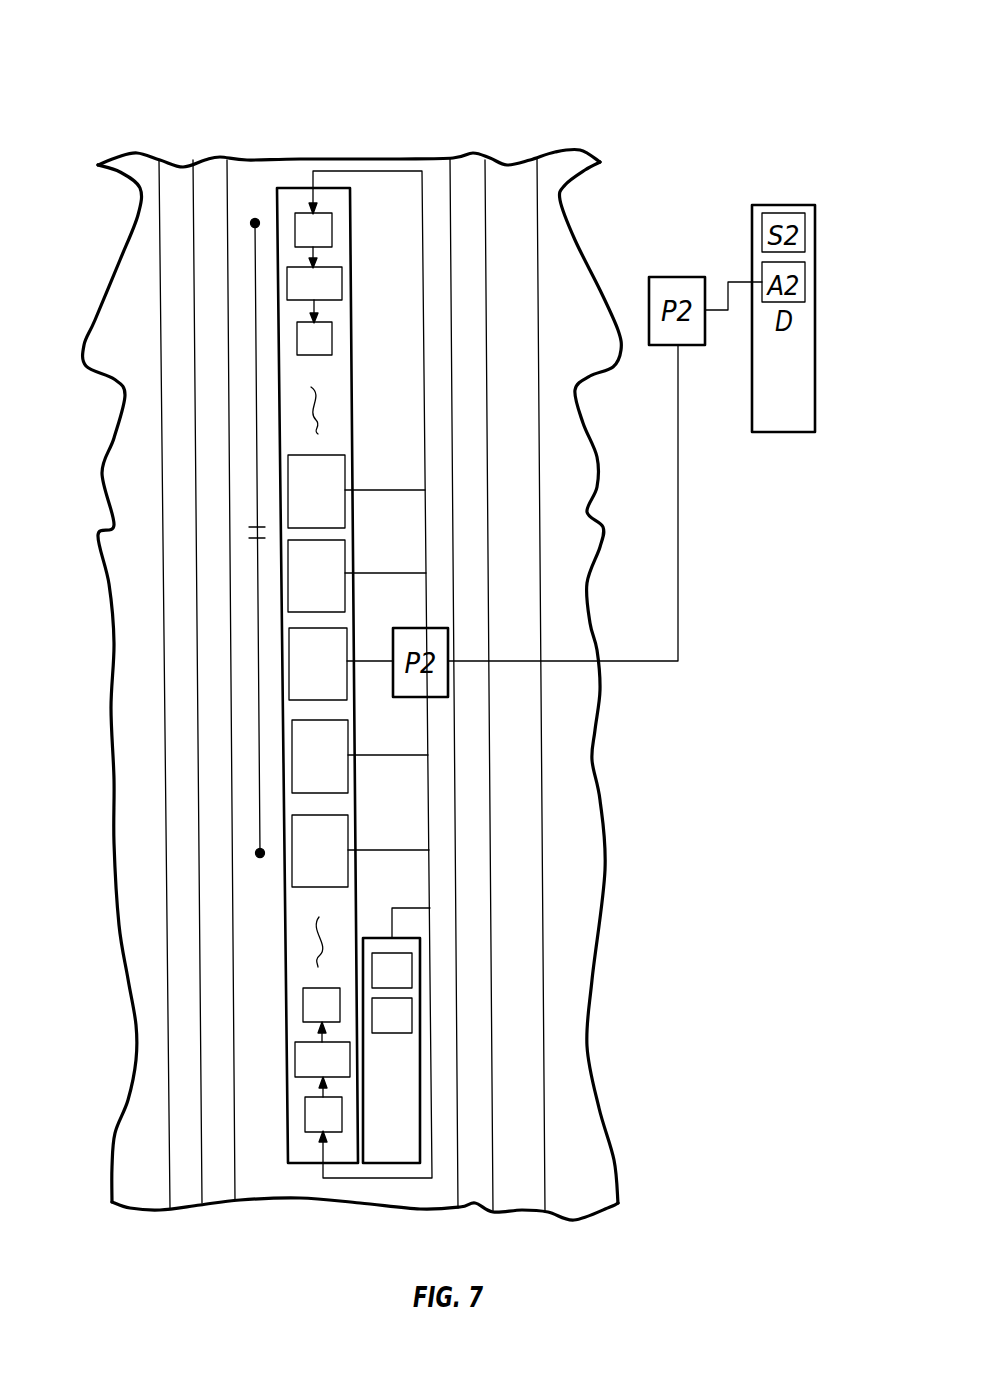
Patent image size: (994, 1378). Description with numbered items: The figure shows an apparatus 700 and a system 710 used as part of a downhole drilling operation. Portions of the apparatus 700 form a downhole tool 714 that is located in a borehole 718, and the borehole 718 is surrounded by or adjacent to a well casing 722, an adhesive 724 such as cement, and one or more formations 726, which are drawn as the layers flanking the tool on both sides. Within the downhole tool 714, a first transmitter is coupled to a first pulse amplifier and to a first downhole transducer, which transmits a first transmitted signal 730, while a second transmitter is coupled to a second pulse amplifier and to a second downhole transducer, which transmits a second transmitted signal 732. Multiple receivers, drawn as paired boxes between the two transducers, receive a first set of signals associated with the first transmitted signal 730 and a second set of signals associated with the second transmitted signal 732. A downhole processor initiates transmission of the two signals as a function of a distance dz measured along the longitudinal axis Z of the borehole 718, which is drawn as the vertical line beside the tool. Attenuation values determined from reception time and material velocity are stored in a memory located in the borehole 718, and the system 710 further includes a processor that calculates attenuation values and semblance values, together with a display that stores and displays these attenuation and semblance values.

The apparatus 700 is at (300, 1178).
The system 710 is at (742, 44).
The downhole tool 714 is at (352, 262).
The borehole 718 is at (325, 155).
The well casing 722 is at (215, 158).
The adhesive 724 is at (177, 165).
The formation 726 is at (135, 157).
The first transmitted signal 730 is at (320, 410).
The second transmitted signal 732 is at (313, 943).
The longitudinal axis Z is at (250, 403).
The distance dz is at (247, 530).